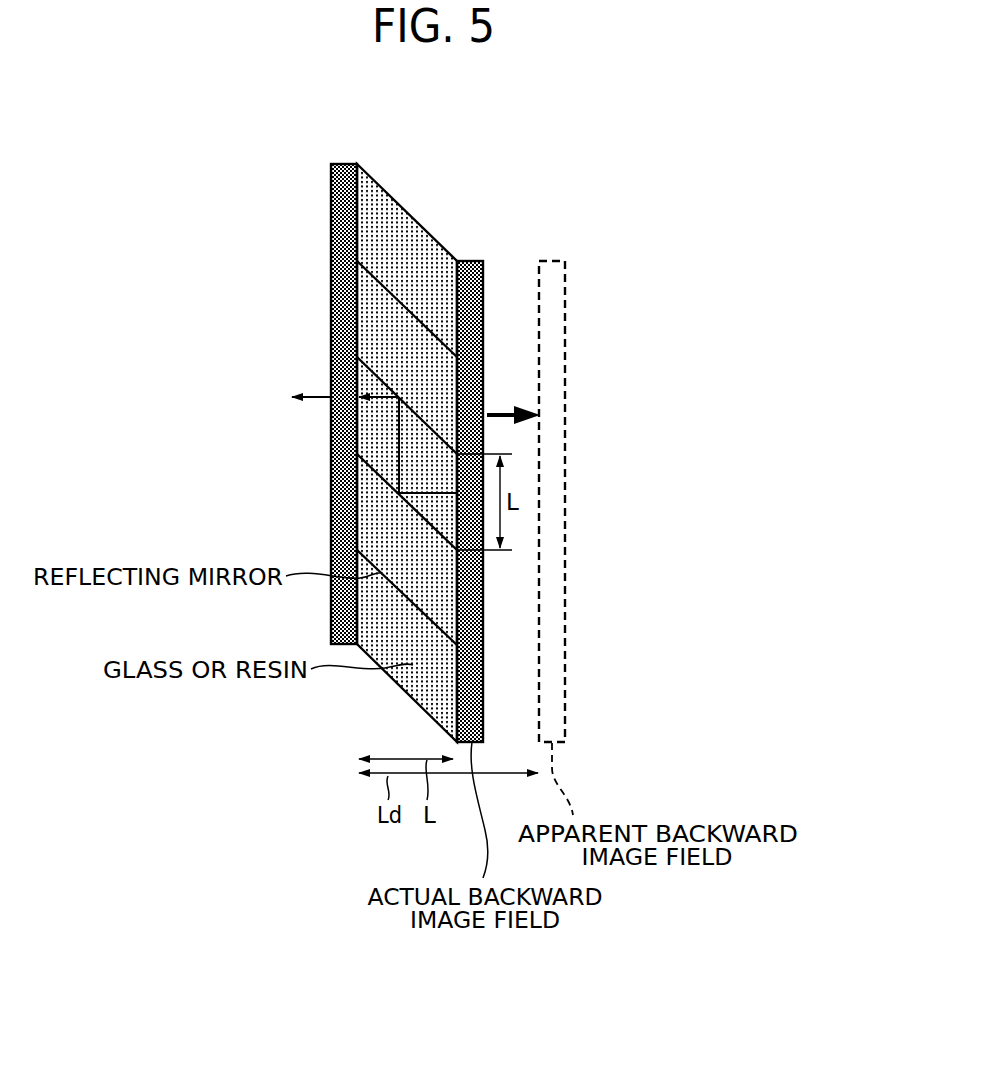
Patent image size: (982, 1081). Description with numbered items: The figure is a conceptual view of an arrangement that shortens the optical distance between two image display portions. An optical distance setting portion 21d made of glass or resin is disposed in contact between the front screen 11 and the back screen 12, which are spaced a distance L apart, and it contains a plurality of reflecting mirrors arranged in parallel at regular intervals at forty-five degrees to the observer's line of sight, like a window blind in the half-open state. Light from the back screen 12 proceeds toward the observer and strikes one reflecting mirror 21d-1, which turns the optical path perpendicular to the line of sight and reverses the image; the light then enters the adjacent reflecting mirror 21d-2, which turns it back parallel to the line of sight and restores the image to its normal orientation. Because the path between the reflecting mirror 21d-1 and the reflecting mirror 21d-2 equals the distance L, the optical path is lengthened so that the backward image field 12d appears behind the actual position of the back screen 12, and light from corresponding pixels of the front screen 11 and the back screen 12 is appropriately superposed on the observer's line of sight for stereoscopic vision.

The front screen 11 is at (345, 163).
The back screen 12 is at (470, 260).
The backward image field 12d is at (557, 260).
The optical distance setting portion 21d is at (408, 212).
The reflecting mirror 21d-1 is at (375, 473).
The reflecting mirror 21d-2 is at (373, 378).